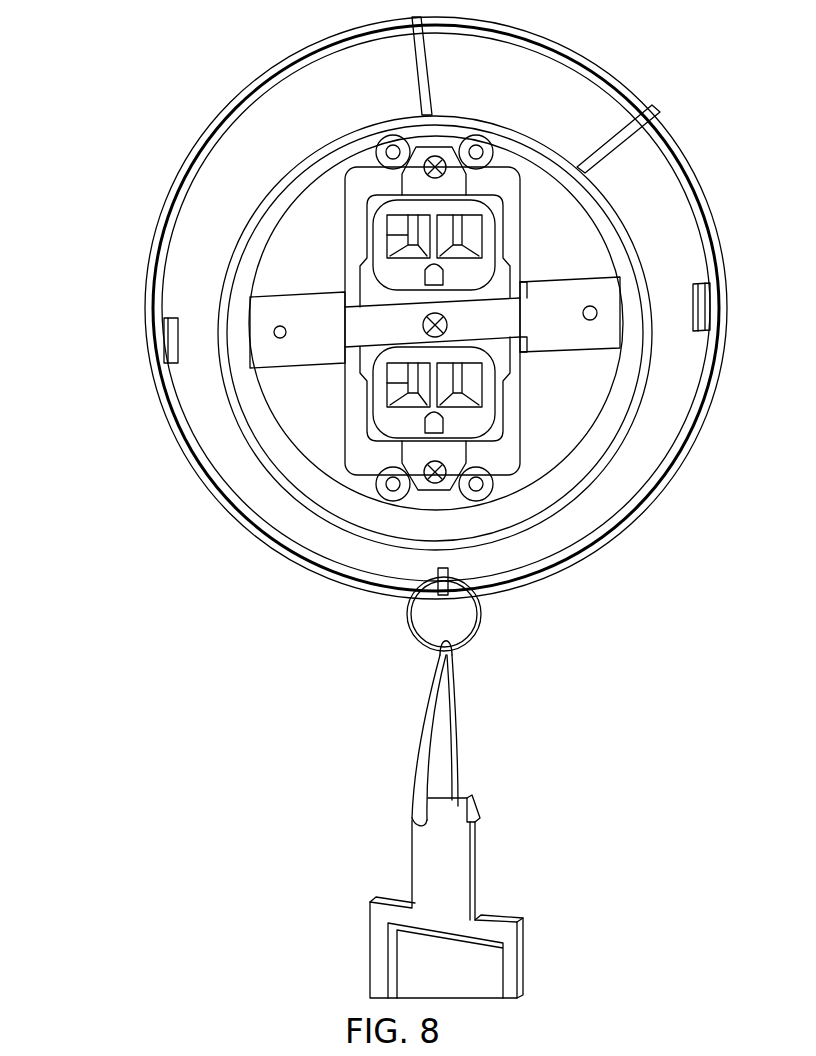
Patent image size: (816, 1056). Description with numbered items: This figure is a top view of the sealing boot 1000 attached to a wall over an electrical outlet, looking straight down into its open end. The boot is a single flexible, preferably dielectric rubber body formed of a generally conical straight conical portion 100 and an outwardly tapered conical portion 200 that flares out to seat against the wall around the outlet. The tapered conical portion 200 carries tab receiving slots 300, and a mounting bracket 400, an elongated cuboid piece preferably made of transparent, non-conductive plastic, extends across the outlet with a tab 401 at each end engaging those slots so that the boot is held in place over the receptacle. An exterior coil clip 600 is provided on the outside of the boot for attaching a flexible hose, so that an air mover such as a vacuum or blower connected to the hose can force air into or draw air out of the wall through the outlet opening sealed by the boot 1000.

The sealing boot 1000 is at (97, 350).
The straight conical portion 100 is at (627, 233).
The outwardly tapered conical portion 200 is at (193, 207).
The tab receiving slot 300 is at (710, 282).
The tab 401 is at (702, 308).
The exterior coil clip 600 is at (628, 113).
The mounting bracket 400 is at (567, 342).